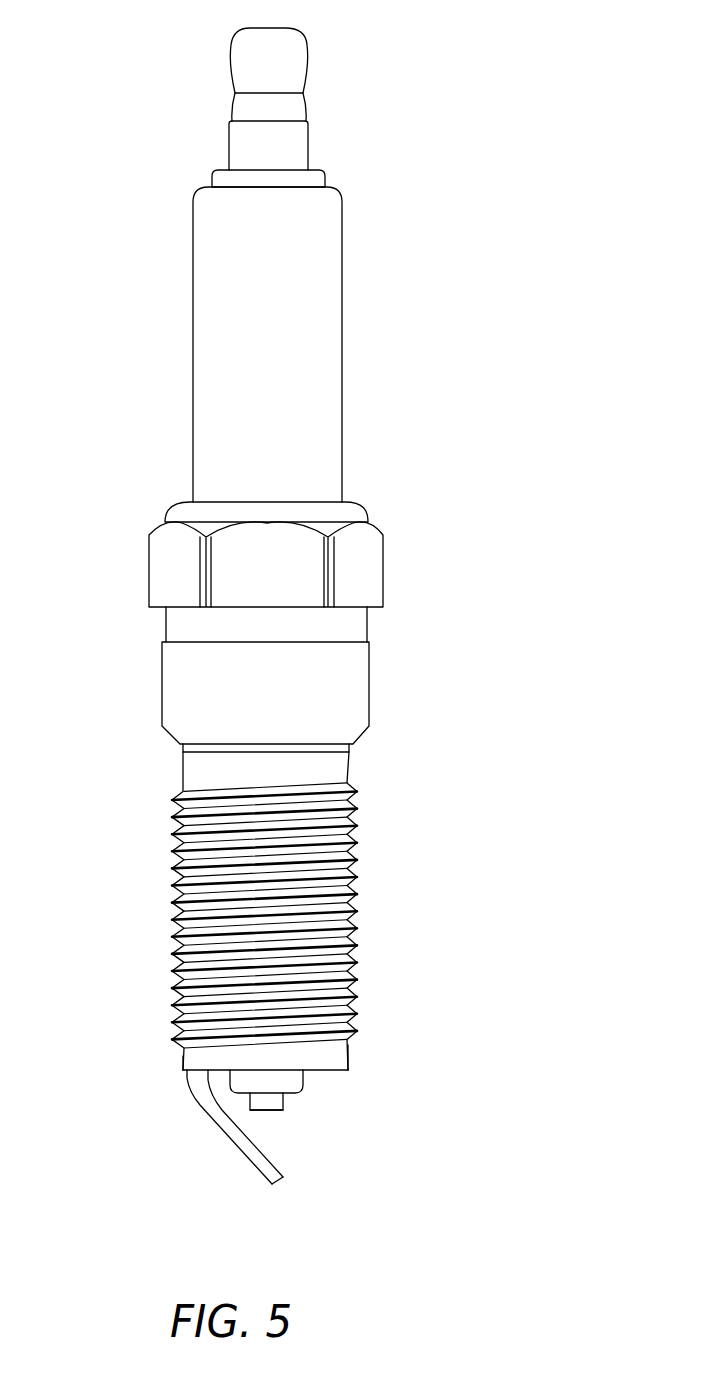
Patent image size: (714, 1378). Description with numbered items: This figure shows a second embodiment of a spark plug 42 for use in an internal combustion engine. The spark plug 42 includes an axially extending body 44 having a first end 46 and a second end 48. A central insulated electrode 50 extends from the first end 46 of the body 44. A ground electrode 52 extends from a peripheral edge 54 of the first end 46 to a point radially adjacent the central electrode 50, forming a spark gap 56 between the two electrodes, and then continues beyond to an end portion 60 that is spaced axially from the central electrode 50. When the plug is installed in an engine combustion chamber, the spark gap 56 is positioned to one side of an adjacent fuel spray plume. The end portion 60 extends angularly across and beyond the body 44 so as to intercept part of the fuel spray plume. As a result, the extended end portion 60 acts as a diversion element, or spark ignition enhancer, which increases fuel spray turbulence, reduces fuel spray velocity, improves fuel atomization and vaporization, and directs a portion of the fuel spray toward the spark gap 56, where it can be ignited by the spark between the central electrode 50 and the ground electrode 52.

The spark plug 42 is at (138, 502).
The axially extending body 44 is at (162, 681).
The first end 46 is at (185, 1059).
The second end 48 is at (267, 28).
The central insulated electrode 50 is at (263, 1112).
The ground electrode 52 is at (222, 1143).
The peripheral edge 54 is at (183, 1067).
The spark gap 56 is at (240, 1115).
The end portion 60 is at (278, 1182).